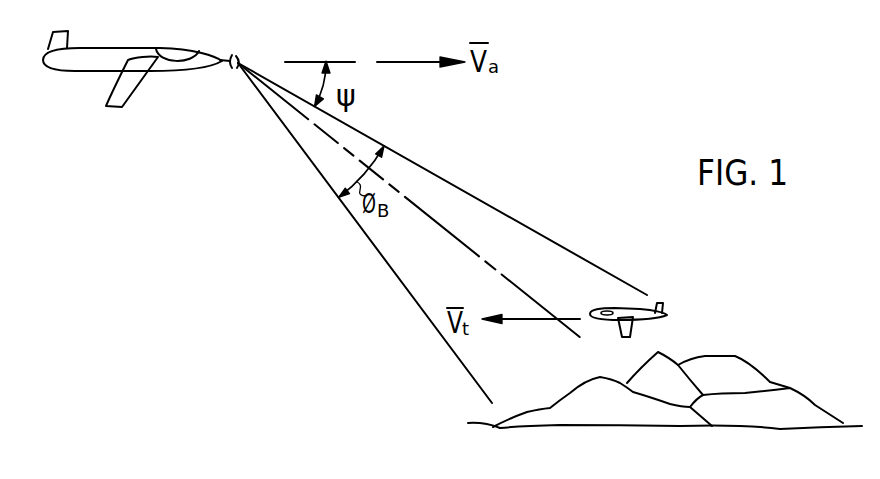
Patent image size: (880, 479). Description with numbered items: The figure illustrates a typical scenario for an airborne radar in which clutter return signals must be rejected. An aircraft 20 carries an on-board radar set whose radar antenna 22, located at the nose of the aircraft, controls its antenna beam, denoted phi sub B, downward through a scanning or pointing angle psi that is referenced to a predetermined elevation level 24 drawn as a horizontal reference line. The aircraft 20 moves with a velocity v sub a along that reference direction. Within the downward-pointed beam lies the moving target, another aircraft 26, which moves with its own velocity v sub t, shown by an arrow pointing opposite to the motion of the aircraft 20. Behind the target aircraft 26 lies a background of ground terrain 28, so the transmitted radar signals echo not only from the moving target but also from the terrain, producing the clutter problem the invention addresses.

The aircraft 20 is at (184, 72).
The radar antenna 22 is at (235, 55).
The predetermined elevation level 24 is at (298, 61).
The aircraft 26 is at (657, 323).
The ground terrain 28 is at (727, 461).